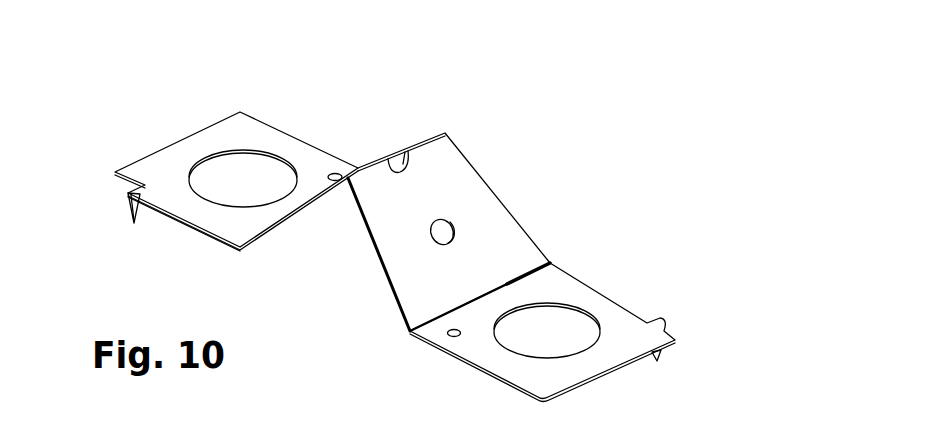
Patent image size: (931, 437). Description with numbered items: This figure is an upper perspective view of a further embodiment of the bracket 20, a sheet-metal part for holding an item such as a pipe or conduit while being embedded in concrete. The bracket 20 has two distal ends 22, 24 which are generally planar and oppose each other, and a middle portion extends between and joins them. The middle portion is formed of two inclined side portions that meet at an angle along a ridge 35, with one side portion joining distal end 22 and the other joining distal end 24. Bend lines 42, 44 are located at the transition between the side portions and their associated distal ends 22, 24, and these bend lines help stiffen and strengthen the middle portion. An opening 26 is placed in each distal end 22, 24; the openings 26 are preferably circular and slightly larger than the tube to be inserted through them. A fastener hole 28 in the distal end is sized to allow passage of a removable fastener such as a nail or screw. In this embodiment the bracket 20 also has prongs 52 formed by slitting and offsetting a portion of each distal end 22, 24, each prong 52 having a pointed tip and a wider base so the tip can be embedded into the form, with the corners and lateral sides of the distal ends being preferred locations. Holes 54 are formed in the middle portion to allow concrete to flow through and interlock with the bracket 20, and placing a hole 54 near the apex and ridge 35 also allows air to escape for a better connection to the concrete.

The bracket 20 is at (528, 192).
The distal end 22 is at (622, 320).
The distal end 24 is at (243, 132).
The opening 26 is at (242, 183).
The fastener hole 28 is at (440, 338).
The ridge 35 is at (443, 132).
The bend line 42 is at (507, 283).
The bend line 44 is at (280, 232).
The prong 52 is at (125, 203).
The hole 54 is at (400, 158).